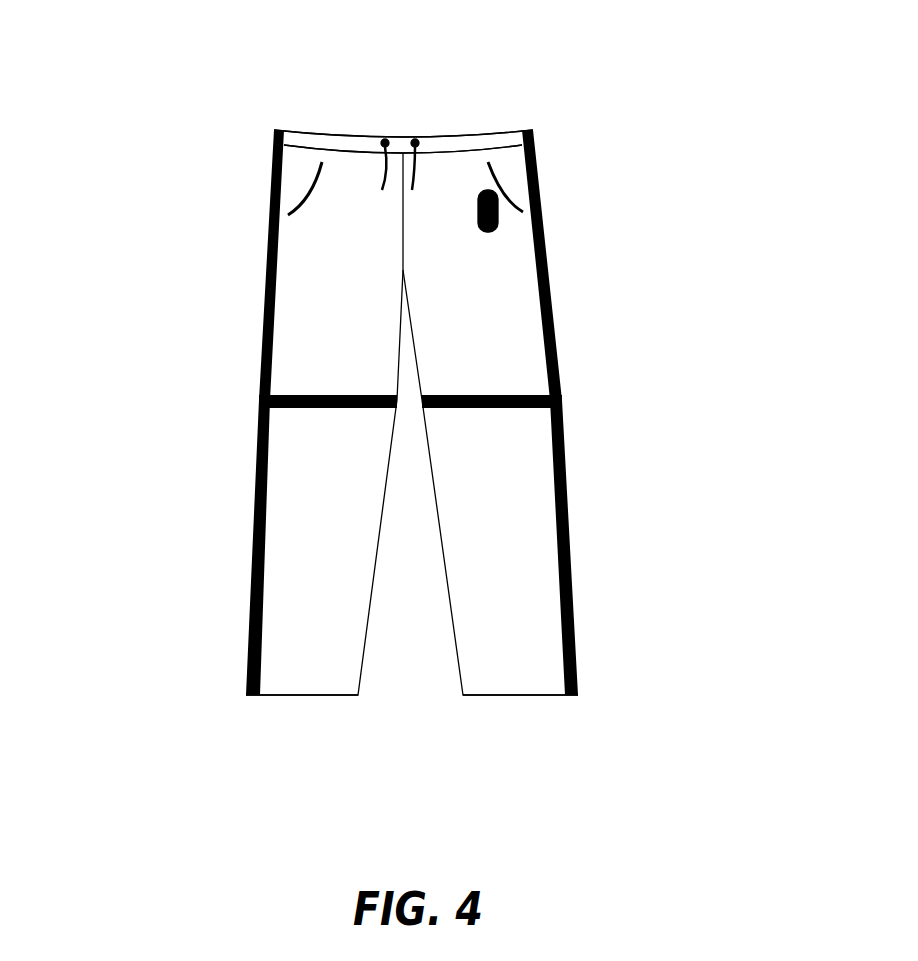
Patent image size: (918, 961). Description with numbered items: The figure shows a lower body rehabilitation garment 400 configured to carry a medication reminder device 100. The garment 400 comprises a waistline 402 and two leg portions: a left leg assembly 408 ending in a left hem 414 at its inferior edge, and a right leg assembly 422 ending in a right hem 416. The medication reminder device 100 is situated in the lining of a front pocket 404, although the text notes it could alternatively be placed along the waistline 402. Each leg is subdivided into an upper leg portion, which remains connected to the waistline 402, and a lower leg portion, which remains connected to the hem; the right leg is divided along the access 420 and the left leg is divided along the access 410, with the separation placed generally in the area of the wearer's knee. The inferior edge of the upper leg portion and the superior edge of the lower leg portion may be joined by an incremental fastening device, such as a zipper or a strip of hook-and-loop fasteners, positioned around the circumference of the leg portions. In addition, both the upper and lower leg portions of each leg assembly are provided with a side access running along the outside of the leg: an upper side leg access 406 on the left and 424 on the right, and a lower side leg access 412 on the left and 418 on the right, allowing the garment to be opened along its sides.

The medication reminder device 100 is at (497, 215).
The lower body garment 400 is at (257, 93).
The waistline 402 is at (472, 147).
The front pocket 404 is at (507, 190).
The left upper side leg access 406 is at (548, 308).
The left leg assembly 408 is at (525, 458).
The left leg access 410 is at (513, 397).
The left lower side leg access 412 is at (567, 467).
The left hem 414 is at (513, 693).
The right hem 416 is at (312, 695).
The right lower side leg access 418 is at (253, 517).
The right leg access 420 is at (307, 397).
The right leg assembly 422 is at (287, 512).
The right upper side leg access 424 is at (265, 257).